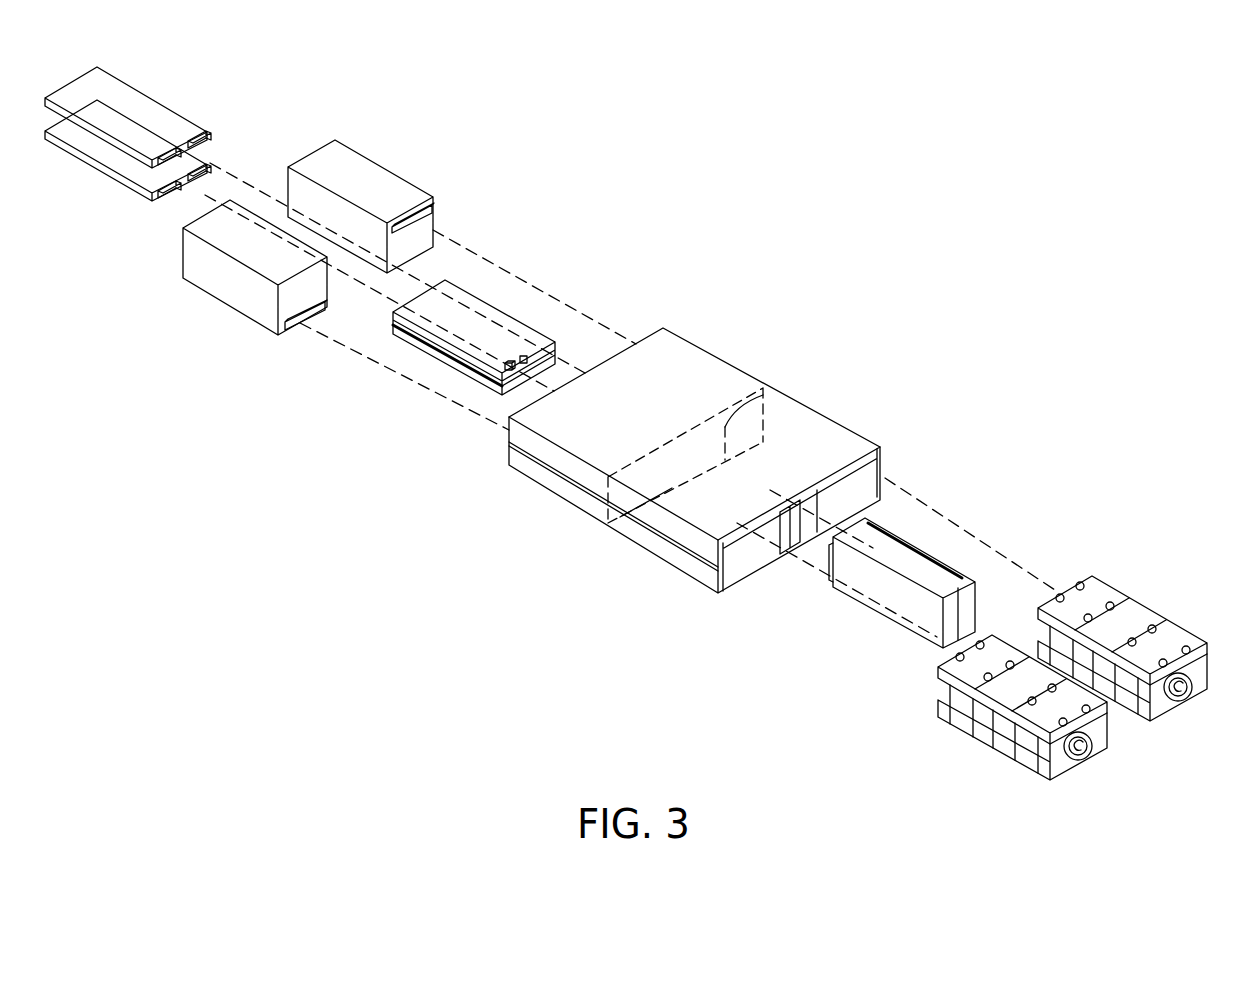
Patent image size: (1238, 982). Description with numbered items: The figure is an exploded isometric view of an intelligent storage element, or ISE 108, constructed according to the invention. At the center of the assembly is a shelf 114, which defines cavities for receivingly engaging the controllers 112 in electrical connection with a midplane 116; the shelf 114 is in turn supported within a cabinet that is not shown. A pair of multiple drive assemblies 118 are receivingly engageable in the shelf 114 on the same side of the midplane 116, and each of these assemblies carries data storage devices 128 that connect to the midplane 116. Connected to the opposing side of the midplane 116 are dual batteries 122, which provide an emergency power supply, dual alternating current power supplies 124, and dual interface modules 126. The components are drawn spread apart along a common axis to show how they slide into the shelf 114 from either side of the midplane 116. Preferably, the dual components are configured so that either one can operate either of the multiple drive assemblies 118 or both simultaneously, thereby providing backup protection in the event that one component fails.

The ISE 108 is at (737, 188).
The controllers 112 is at (932, 565).
The shelf 114 is at (568, 498).
The midplane 116 is at (695, 440).
The multiple drive assemblies 118 is at (1108, 575).
The dual batteries 122 is at (467, 305).
The dual alternating current power supplies 124 is at (357, 178).
The dual interface modules 126 is at (153, 120).
The data storage devices 128 is at (1092, 580).